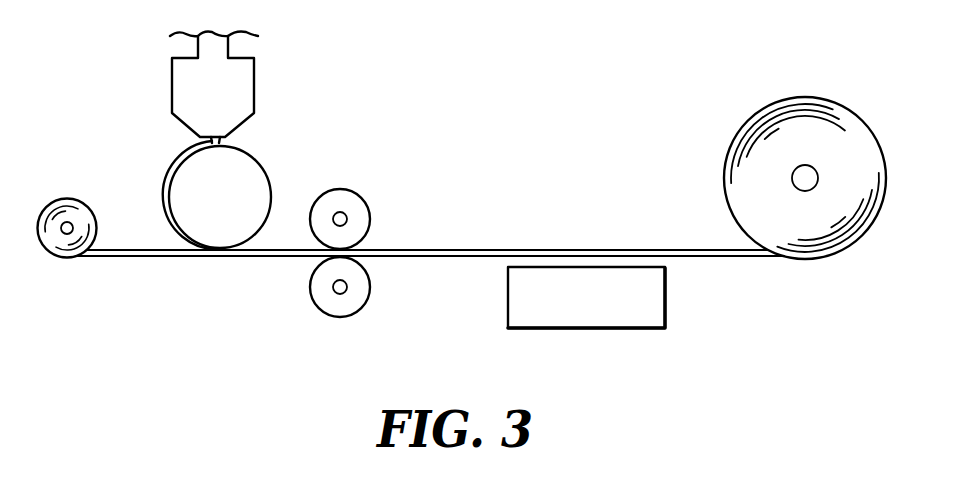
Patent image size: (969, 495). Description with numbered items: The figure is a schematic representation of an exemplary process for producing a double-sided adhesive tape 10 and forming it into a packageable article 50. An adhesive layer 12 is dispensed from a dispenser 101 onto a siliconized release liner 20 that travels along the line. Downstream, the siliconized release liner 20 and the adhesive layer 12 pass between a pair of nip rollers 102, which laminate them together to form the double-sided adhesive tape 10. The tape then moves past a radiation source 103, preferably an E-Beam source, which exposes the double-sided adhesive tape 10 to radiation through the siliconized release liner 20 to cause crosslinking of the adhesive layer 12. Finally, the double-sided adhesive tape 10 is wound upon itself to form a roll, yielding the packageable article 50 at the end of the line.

The double-sided adhesive tape 10 is at (525, 222).
The adhesive layer 12 is at (173, 165).
The siliconized release liner 20 is at (133, 260).
The packageable article 50 is at (852, 122).
The dispenser 101 is at (172, 82).
The nip rollers 102 is at (351, 191).
The radiation source 103 is at (595, 315).